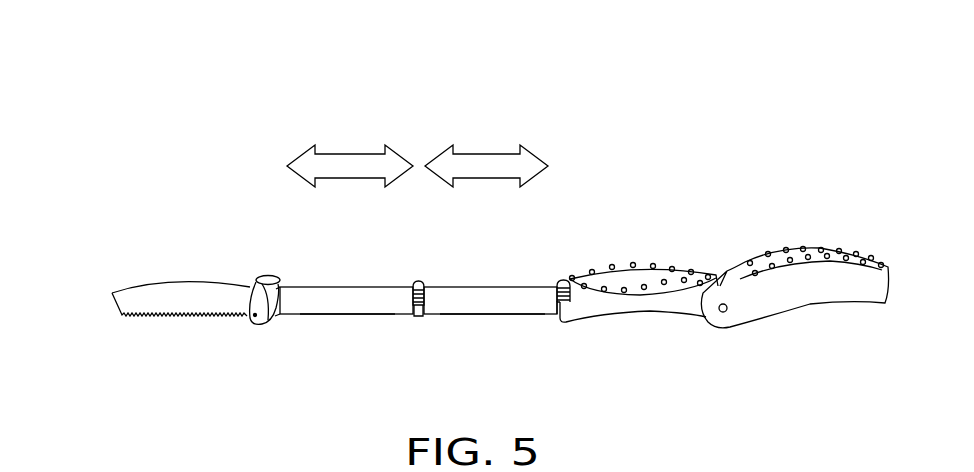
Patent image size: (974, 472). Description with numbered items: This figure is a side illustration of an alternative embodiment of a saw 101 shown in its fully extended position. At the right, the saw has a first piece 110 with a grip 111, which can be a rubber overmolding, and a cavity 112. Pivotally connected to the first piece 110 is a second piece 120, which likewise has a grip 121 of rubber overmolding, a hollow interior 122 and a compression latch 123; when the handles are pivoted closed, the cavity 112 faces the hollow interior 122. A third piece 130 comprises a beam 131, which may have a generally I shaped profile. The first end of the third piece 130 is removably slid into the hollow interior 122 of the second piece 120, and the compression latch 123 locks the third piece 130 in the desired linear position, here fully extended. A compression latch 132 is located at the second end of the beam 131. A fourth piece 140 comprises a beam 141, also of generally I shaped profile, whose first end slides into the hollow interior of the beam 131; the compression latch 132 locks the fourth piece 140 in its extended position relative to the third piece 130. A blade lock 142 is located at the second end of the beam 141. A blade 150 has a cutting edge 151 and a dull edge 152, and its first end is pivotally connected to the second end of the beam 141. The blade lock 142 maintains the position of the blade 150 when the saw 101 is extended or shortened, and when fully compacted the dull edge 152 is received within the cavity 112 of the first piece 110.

The saw 101 is at (530, 125).
The first piece 110 is at (800, 247).
The grip 111 is at (853, 252).
The cavity 112 is at (800, 280).
The second piece 120 is at (620, 266).
The grip 121 is at (652, 268).
The hollow interior 122 is at (622, 300).
The compression latch 123 is at (572, 278).
The third piece 130 is at (478, 286).
The beam 131 is at (478, 318).
The compression latch 132 is at (417, 318).
The fourth piece 140 is at (300, 286).
The beam 141 is at (335, 316).
The blade lock 142 is at (262, 277).
The blade 150 is at (147, 283).
The cutting edge 151 is at (170, 316).
The dull edge 152 is at (128, 283).